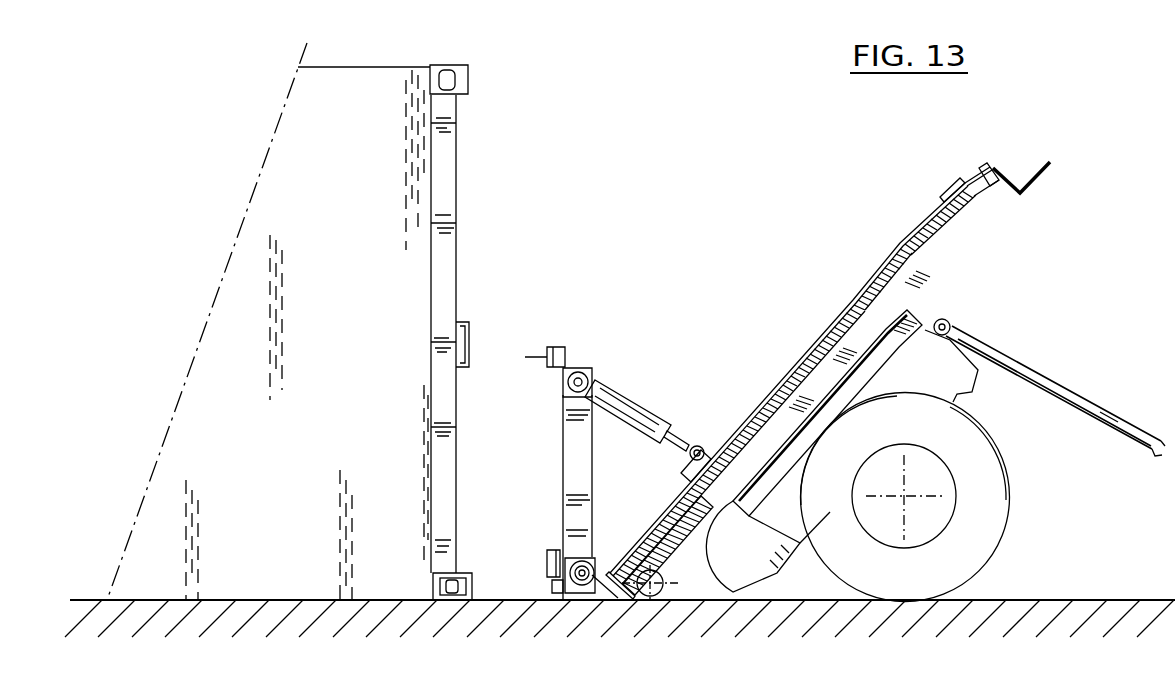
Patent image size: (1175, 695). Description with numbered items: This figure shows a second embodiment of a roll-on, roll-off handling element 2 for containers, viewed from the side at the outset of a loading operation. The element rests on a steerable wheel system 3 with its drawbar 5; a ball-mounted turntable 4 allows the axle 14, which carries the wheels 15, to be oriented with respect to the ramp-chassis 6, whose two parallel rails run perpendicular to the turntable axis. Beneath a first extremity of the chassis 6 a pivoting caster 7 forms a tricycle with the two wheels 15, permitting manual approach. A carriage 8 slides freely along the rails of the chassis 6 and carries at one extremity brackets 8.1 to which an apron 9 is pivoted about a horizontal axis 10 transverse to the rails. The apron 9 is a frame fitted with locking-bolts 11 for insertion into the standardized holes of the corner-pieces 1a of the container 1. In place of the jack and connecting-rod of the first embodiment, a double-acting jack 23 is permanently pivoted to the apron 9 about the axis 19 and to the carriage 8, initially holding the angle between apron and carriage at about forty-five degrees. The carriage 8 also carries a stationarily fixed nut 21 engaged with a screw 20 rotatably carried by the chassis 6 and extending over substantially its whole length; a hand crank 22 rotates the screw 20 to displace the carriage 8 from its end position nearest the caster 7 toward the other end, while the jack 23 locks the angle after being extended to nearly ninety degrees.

The container 1 is at (292, 199).
The corner-piece 1a is at (462, 84).
The roll-on, roll-off handling element 2 is at (672, 250).
The steerable wheel system 3 is at (1030, 353).
The ball-mounted turntable 4 is at (895, 310).
The drawbar 5 is at (1098, 413).
The ramp-chassis 6 is at (952, 188).
The pivoting caster 7 is at (655, 592).
The carriage 8 is at (720, 500).
The brackets 8.1 is at (603, 572).
The apron 9 is at (566, 485).
The horizontal axis 10 is at (598, 600).
The locking-bolt 11 is at (548, 358).
The axle 14 is at (905, 498).
The wheels 15 is at (920, 568).
The axis 19 is at (584, 368).
The screw 20 is at (922, 233).
The stationarily fixed nut 21 is at (666, 497).
The hand crank 22 is at (1043, 182).
The double-acting jack 23 is at (632, 402).